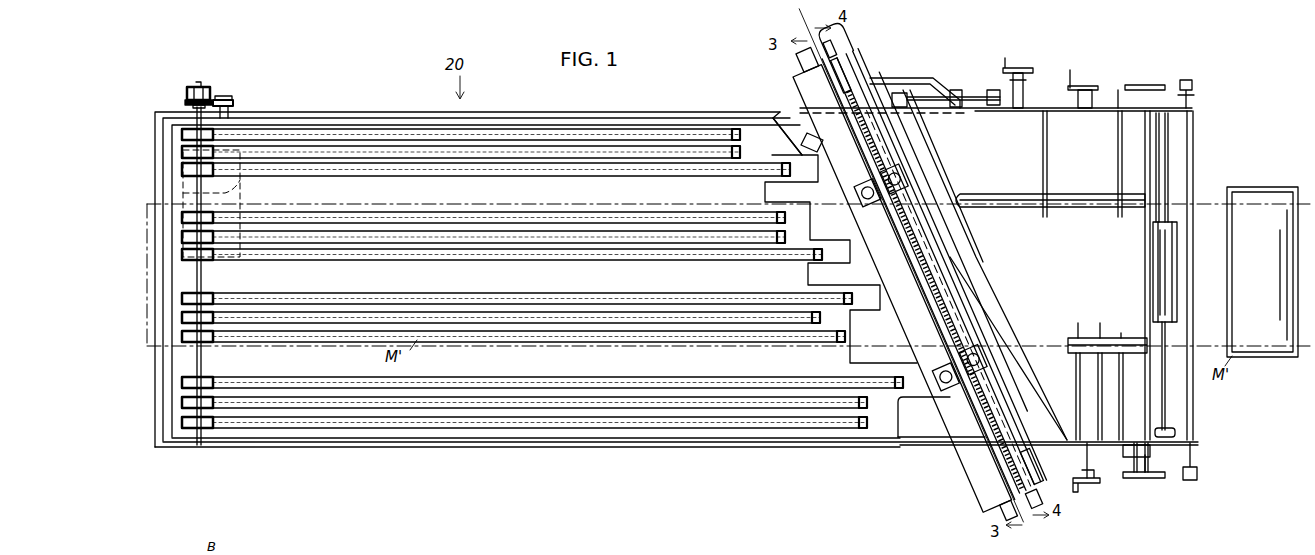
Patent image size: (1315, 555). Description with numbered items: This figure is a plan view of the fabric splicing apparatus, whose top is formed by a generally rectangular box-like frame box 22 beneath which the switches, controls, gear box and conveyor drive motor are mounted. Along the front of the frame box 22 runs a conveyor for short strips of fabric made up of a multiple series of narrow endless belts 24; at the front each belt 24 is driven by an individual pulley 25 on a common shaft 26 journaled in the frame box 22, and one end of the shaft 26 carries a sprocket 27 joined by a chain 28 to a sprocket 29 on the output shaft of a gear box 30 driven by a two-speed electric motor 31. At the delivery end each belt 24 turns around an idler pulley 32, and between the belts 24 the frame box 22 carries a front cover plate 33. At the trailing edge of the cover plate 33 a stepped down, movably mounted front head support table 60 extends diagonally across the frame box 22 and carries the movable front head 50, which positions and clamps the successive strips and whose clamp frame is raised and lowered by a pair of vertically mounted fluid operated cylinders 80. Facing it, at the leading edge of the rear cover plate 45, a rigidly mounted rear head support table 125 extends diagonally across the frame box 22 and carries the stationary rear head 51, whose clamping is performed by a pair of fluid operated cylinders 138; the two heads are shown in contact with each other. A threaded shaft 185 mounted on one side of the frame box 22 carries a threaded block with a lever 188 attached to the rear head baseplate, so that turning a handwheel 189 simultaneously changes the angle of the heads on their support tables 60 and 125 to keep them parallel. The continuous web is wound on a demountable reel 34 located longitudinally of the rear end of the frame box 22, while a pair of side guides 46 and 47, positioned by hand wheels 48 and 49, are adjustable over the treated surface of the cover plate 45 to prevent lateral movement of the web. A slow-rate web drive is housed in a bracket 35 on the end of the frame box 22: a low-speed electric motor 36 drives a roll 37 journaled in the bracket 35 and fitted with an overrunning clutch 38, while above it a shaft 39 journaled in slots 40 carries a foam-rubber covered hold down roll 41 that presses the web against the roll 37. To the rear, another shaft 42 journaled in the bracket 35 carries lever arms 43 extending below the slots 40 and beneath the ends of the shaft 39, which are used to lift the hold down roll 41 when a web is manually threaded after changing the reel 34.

The frame box 22 is at (592, 112).
The endless belts 24 is at (380, 140).
The pulley 25 is at (185, 175).
The shaft 26 is at (195, 360).
The sprocket 27 is at (194, 87).
The chain 28 is at (222, 100).
The sprocket 29 is at (233, 103).
The gear box 30 is at (240, 129).
The two-speed electric motor 31 is at (242, 182).
The idler pulley 32 is at (742, 140).
The cover plate 33 is at (633, 185).
The reel 34 is at (1260, 187).
The bracket 35 is at (1118, 90).
The electric motor 36 is at (1150, 460).
The roll 37 is at (1170, 420).
The overrunning clutch 38 is at (1160, 118).
The shaft 39 is at (1170, 146).
The slots 40 is at (1170, 80).
The hold down roll 41 is at (1170, 275).
The shaft 42 is at (1193, 310).
The lever arm 43 is at (1160, 85).
The cover plate 45 is at (1130, 270).
The side guide 46 is at (1108, 338).
The side guide 47 is at (1085, 208).
The hand wheel 48 is at (1090, 492).
The hand wheel 49 is at (1084, 86).
The front head 50 is at (795, 83).
The rear head 51 is at (880, 119).
The front head support table 60 is at (795, 118).
The fluid operated cylinders 80 is at (860, 195).
The rear head support table 125 is at (1030, 400).
The fluid operated cylinders 138 is at (900, 178).
The threaded shaft 185 is at (970, 95).
The lever 188 is at (900, 78).
The handwheel 189 is at (1024, 70).